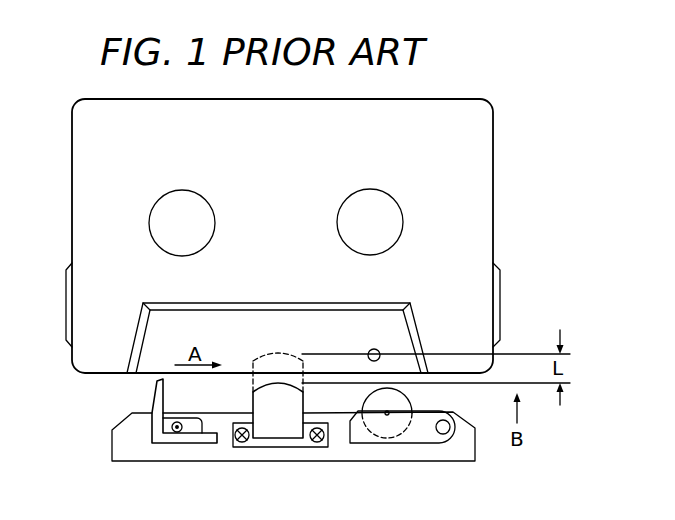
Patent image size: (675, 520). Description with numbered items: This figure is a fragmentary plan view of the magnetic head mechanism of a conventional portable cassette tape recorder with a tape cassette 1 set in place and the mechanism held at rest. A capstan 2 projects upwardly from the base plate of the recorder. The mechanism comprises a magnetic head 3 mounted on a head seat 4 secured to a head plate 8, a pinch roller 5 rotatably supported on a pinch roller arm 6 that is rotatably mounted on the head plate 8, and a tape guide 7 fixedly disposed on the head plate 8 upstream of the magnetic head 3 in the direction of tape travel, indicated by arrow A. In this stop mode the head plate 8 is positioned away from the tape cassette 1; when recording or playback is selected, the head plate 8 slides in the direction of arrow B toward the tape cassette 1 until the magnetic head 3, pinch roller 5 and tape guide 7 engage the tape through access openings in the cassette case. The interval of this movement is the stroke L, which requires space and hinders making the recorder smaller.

The tape cassette 1 is at (80, 165).
The capstan 2 is at (368, 353).
The magnetic head 3 is at (282, 428).
The head seat 4 is at (259, 441).
The pinch roller 5 is at (400, 430).
The pinch roller arm 6 is at (428, 433).
The tape guide 7 is at (150, 409).
The head plate 8 is at (465, 448).